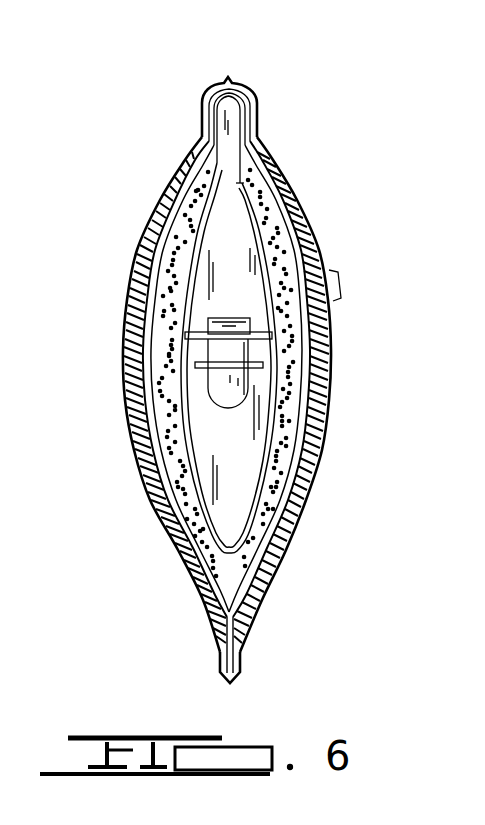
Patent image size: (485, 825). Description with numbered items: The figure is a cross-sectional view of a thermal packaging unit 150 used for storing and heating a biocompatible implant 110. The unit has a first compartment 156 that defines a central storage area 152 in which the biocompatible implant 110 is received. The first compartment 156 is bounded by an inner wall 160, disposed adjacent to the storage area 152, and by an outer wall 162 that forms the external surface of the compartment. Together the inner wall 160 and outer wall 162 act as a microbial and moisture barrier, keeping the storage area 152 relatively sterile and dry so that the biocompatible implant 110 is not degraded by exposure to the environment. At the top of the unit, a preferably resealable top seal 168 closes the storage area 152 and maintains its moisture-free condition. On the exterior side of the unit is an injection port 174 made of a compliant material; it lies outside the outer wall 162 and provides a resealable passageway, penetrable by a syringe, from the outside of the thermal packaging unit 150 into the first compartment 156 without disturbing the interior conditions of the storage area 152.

The thermal packaging unit 150 is at (172, 140).
The top seal 168 is at (229, 93).
The storage area 152 is at (229, 204).
The first compartment 156 is at (176, 258).
The biocompatible implant 110 is at (222, 348).
The inner wall 160 is at (187, 406).
The outer wall 162 is at (166, 505).
The injection port 174 is at (340, 284).